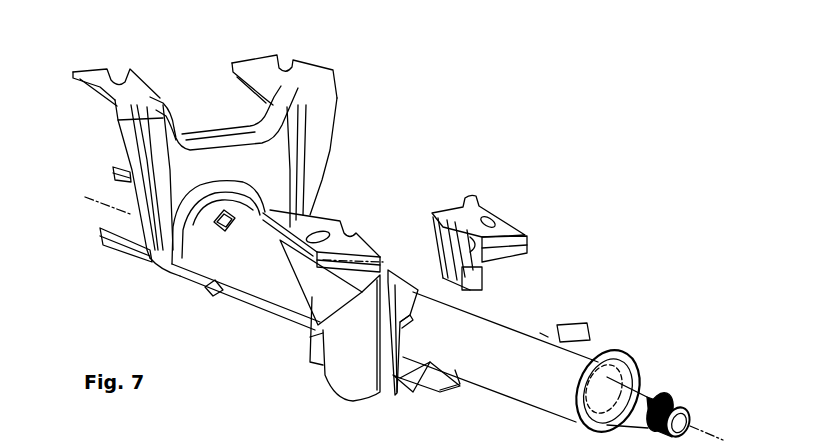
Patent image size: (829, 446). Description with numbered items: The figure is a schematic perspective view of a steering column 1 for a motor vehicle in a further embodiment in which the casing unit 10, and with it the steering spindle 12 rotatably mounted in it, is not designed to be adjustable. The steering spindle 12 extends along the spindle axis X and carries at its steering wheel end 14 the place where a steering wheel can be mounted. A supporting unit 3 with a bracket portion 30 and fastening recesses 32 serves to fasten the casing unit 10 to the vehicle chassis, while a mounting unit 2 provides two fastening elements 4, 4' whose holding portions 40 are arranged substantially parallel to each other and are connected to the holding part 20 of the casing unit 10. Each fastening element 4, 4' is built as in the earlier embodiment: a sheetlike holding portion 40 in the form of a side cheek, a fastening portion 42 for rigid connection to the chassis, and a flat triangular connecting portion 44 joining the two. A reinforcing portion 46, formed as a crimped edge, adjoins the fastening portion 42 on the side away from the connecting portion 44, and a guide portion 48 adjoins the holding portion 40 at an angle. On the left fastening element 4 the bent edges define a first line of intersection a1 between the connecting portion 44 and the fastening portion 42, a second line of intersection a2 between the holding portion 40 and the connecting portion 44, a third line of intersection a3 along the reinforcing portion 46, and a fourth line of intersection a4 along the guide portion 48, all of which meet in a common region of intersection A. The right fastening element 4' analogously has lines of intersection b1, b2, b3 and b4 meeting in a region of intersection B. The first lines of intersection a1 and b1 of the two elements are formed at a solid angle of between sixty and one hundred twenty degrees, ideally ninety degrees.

The steering column 1 is at (665, 103).
The mounting unit 2 is at (502, 117).
The supporting unit 3 is at (346, 70).
The fastening element 4 is at (218, 209).
The fastening element 4' is at (545, 202).
The casing unit 10 is at (540, 315).
The steering spindle 12 is at (642, 387).
The steering wheel end 14 is at (668, 397).
The holding part 20 is at (413, 382).
The bracket portion 30 is at (132, 92).
The fastening recesses 32 is at (287, 65).
The holding portion 40 is at (337, 368).
The fastening portion 42 is at (296, 240).
The connecting portion 44 is at (440, 247).
The reinforcing portion 46 is at (305, 265).
The guide portion 48 is at (393, 390).
The region of intersection A is at (387, 260).
The region of intersection B is at (452, 220).
The spindle axis X is at (706, 428).
The first line of intersection a1 is at (183, 268).
The second line of intersection a2 is at (300, 355).
The third line of intersection a3 is at (460, 284).
The fourth line of intersection a4 is at (372, 395).
The first line of intersection b1 is at (480, 210).
The second line of intersection b2 is at (515, 192).
The third line of intersection b3 is at (520, 244).
The fourth line of intersection b4 is at (483, 165).